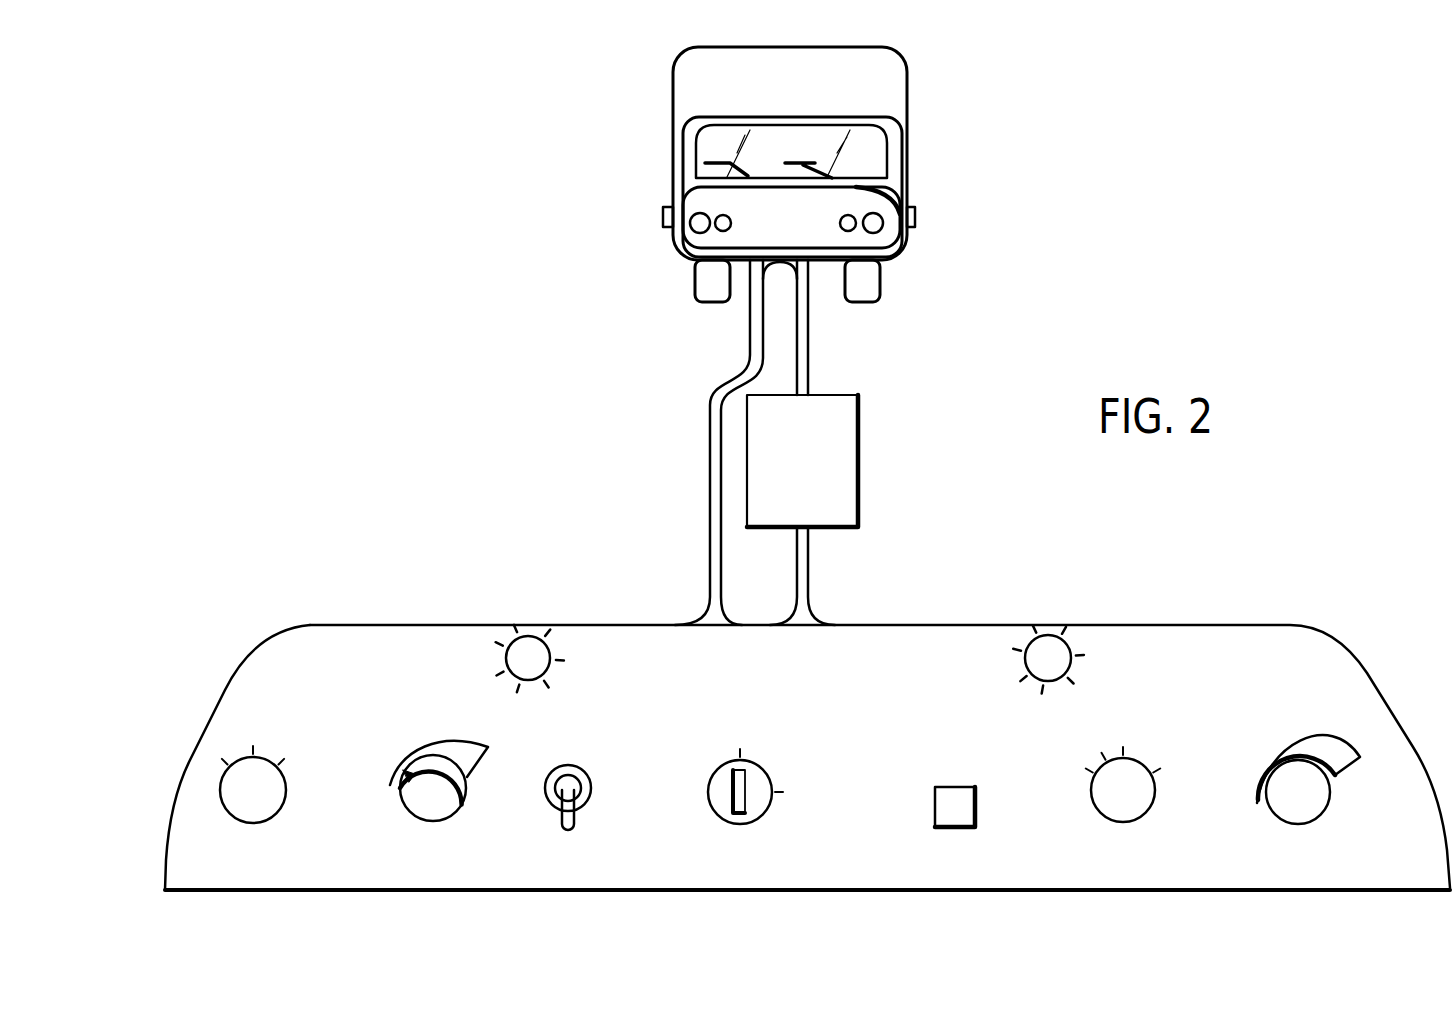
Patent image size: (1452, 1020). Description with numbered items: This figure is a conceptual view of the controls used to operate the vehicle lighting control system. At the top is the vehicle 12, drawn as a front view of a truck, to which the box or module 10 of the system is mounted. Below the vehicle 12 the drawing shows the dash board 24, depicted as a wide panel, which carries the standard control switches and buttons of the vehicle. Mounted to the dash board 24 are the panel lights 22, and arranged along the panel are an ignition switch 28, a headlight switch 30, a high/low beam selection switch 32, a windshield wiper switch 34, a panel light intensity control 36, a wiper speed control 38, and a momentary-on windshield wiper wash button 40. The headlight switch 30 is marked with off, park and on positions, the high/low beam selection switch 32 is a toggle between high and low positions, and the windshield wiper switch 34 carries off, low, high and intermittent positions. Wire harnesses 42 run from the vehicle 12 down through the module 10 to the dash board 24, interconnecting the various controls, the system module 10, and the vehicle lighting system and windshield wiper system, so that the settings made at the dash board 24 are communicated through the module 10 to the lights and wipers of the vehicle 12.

The module 10 is at (858, 445).
The vehicle 12 is at (893, 78).
The panel lights 22 is at (1045, 648).
The dash board 24 is at (1267, 643).
The ignition switch 28 is at (763, 763).
The headlight switch 30 is at (242, 800).
The high/low beam selection switch 32 is at (587, 773).
The windshield wiper switch 34 is at (1113, 798).
The panel light intensity control 36 is at (413, 797).
The wiper speed control 38 is at (1282, 803).
The windshield wiper wash button 40 is at (943, 813).
The wire harnesses 42 is at (808, 352).